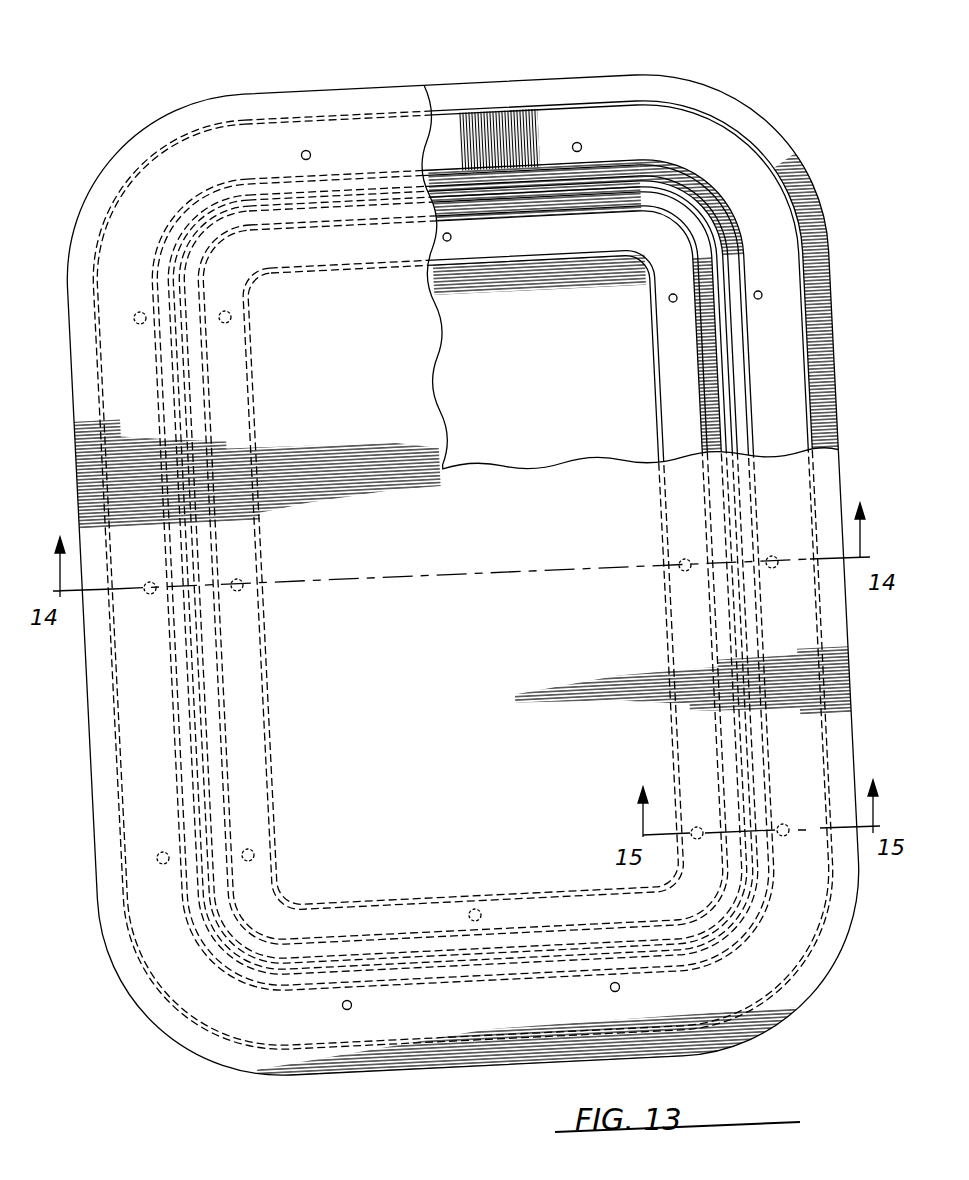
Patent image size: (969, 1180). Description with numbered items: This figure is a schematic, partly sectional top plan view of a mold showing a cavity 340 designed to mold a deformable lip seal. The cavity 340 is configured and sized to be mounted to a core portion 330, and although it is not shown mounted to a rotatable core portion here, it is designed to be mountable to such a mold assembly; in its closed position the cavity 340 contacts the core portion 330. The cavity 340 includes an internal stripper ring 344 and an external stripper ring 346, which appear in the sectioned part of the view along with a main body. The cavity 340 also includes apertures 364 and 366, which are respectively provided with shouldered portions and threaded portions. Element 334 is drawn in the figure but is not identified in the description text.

The core portion 330 is at (690, 102).
The sealing flange 334 is at (700, 223).
The cavity 340 is at (318, 89).
The internal stripper ring 344 is at (577, 227).
The external stripper ring 346 is at (508, 143).
The aperture 364 is at (233, 318).
The aperture 366 is at (300, 155).